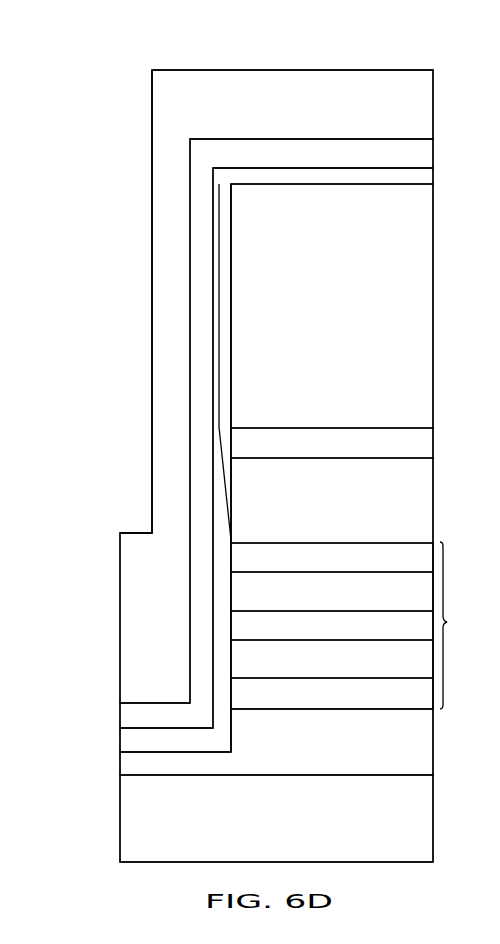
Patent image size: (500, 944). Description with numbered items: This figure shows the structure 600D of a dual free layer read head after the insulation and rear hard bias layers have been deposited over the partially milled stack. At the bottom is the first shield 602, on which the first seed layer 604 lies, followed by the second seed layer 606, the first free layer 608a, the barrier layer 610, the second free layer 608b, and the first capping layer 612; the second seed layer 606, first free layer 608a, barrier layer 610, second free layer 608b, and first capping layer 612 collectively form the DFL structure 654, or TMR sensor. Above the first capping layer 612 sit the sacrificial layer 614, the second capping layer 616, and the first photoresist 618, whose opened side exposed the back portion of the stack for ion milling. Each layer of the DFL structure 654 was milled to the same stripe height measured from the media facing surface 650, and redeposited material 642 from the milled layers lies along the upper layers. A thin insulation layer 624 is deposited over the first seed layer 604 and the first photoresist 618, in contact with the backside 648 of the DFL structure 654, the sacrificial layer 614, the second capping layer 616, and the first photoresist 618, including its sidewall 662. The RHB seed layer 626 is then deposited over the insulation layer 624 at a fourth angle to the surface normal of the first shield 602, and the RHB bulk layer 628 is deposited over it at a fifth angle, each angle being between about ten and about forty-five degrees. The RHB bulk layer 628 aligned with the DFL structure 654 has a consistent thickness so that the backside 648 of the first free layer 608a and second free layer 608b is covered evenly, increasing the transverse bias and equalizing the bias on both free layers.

The structure 600D is at (360, 52).
The first shield 602 is at (382, 834).
The first seed layer 604 is at (382, 753).
The second seed layer 606 is at (382, 704).
The first free layer 608a is at (375, 674).
The second free layer 608b is at (375, 605).
The barrier layer 610 is at (382, 635).
The first capping layer 612 is at (382, 569).
The sacrificial layer 614 is at (382, 514).
The second capping layer 616 is at (382, 453).
The first photoresist 618 is at (382, 318).
The insulation layer 624 is at (140, 740).
The RHB seed layer 626 is at (140, 713).
The RHB bulk layer 628 is at (129, 629).
The redeposited material 642 is at (228, 233).
The backside 648 is at (138, 473).
The media facing surface 650 is at (448, 548).
The DFL structure 654 is at (464, 625).
The sidewall 662 is at (232, 361).